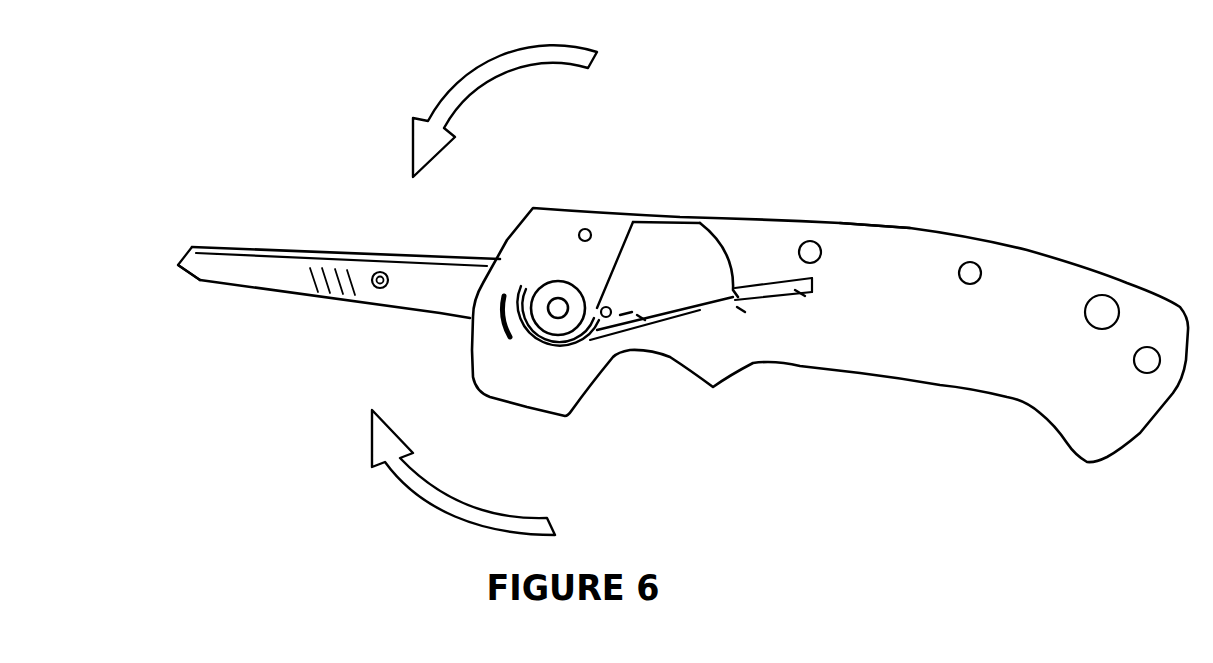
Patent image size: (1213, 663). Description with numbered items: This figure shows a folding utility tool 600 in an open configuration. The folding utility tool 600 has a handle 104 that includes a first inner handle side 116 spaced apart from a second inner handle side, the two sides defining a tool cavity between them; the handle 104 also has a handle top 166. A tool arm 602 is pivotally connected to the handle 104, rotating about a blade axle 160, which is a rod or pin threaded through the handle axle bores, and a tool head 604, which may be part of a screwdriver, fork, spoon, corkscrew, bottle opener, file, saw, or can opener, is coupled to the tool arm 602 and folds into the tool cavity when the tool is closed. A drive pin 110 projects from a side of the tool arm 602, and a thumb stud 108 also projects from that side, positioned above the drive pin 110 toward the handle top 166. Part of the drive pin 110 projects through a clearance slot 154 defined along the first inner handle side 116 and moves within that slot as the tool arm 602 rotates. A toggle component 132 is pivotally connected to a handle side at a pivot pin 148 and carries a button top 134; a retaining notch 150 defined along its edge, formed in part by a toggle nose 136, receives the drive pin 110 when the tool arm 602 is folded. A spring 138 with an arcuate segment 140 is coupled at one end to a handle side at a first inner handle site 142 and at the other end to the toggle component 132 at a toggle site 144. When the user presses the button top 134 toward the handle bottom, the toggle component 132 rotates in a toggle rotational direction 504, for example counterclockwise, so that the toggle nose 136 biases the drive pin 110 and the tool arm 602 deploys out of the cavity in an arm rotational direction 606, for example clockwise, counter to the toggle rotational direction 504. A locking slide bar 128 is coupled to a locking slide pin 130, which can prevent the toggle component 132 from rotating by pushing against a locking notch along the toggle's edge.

The folding utility tool 600 is at (142, 92).
The handle 104 is at (1046, 232).
The first inner handle side 116 is at (920, 248).
The tool arm 602 is at (413, 287).
The tool head 604 is at (188, 277).
The thumb stud 108 is at (381, 270).
The blade axle 160 is at (556, 298).
The clearance slot 154 is at (567, 353).
The drive pin 110 is at (504, 305).
The locking slide bar 128 is at (625, 238).
The locking slide pin 130 is at (627, 225).
The toggle component 132 is at (690, 237).
The button top 134 is at (667, 213).
The toggle nose 136 is at (598, 305).
The pivot pin 148 is at (727, 247).
The first inner handle site 142 is at (810, 283).
The retaining notch 150 is at (627, 327).
The toggle site 144 is at (637, 315).
The arcuate segment 140 is at (737, 307).
The spring 138 is at (795, 290).
The toggle rotational direction 504 is at (493, 68).
The arm rotational direction 606 is at (428, 503).
The handle top 166 is at (720, 508).